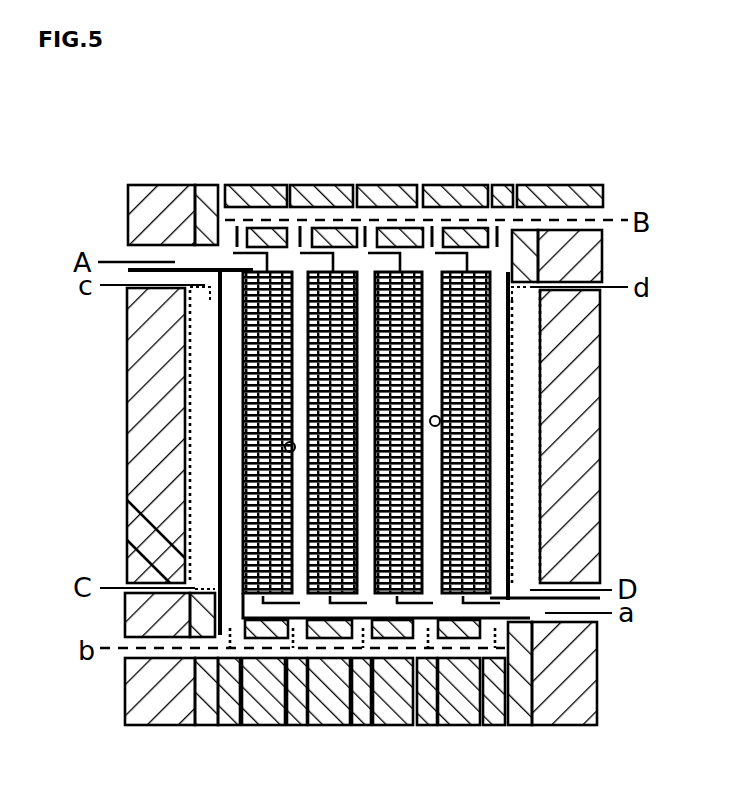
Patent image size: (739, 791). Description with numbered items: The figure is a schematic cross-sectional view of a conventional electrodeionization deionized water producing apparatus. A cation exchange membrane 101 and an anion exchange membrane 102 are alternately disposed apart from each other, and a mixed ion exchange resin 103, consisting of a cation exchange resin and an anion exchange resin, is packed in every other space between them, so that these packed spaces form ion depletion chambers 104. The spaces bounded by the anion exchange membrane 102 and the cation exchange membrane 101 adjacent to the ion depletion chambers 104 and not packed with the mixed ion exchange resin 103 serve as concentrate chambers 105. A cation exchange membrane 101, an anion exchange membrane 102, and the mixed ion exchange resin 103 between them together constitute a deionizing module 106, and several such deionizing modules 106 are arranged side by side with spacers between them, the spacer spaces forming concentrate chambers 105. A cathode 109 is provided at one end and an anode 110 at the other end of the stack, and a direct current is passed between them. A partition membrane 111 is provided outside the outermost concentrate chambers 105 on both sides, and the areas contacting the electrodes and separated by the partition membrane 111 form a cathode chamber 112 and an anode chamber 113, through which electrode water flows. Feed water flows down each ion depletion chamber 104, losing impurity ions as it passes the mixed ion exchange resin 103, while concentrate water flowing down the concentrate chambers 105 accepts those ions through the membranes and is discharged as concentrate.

The cation exchange membrane 101 is at (250, 406).
The anion exchange membrane 102 is at (286, 449).
The mixed ion exchange resin 103 is at (262, 312).
The ion depletion chamber 104 is at (245, 491).
The concentrate chamber 105 is at (127, 610).
The deionizing module 106 is at (128, 379).
The cathode 109 is at (130, 525).
The anode 110 is at (545, 525).
The partition membrane 111 is at (218, 548).
The cathode chamber 112 is at (200, 442).
The anode chamber 113 is at (525, 462).